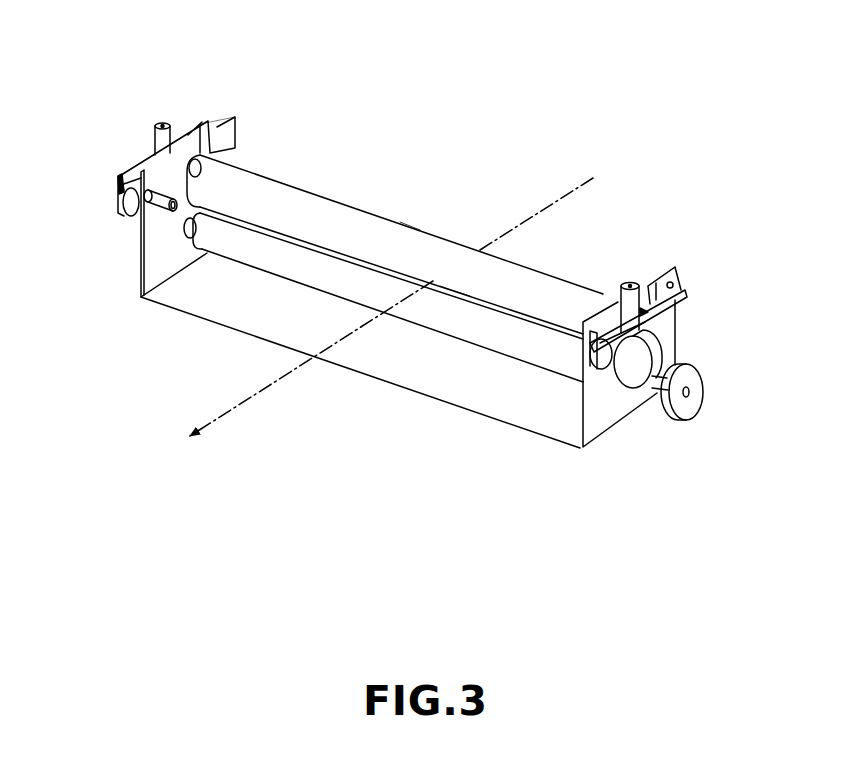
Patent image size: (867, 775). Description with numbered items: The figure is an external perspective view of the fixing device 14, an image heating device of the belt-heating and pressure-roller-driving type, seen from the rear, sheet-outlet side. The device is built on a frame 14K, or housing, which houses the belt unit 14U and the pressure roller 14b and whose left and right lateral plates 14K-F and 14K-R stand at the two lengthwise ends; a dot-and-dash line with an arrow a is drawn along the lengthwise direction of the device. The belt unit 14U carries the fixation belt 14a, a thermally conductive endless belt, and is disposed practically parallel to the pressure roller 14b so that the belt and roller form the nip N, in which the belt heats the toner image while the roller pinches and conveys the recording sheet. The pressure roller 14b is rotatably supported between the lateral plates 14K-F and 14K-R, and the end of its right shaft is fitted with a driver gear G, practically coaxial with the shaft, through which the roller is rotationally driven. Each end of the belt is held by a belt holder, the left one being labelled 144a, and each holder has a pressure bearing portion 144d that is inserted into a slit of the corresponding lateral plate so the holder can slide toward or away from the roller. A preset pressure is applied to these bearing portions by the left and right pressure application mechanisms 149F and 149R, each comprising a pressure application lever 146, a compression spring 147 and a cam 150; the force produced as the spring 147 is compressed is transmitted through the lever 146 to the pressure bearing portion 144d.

The fixing device 14 is at (583, 112).
The frame 14K is at (422, 407).
The left lateral plate 14K-F is at (138, 258).
The right lateral plate 14K-R is at (617, 415).
The fixation belt 14a is at (323, 212).
The pressure roller 14b is at (295, 267).
The belt unit 14U is at (410, 228).
The nip N is at (456, 298).
The axis / direction a is at (372, 324).
The front bearing (144F) 144a is at (210, 152).
The pressure bearing portion 144d is at (669, 334).
The pressure application lever 146 is at (200, 137).
The compression spring 147 is at (150, 148).
The left pressure application mechanism 149F is at (219, 104).
The right pressure application mechanism 149R is at (696, 272).
The cam 150 is at (593, 375).
The driver gear G is at (681, 410).